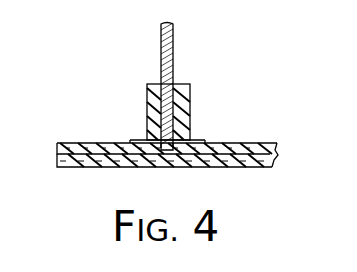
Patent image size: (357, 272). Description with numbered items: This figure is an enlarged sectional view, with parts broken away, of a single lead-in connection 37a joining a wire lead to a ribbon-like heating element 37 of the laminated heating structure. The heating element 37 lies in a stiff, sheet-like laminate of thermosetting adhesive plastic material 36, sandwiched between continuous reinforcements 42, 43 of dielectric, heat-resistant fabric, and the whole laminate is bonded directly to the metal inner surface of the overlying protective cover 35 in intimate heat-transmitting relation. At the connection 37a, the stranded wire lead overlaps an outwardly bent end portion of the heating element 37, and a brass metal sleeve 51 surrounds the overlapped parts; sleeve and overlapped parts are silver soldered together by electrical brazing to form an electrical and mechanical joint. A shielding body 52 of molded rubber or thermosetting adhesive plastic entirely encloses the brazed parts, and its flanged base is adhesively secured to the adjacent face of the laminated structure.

The single lead-in connection 37a is at (173, 43).
The shielding body 52 is at (147, 100).
The metal sleeve 51 is at (190, 140).
The thermosetting adhesive plastic material 36 is at (76, 143).
The protective cover 35 is at (108, 168).
The continuous reinforcement 42 is at (257, 145).
The ribbon-like heating element 37 is at (268, 144).
The continuous reinforcement 43 is at (155, 168).